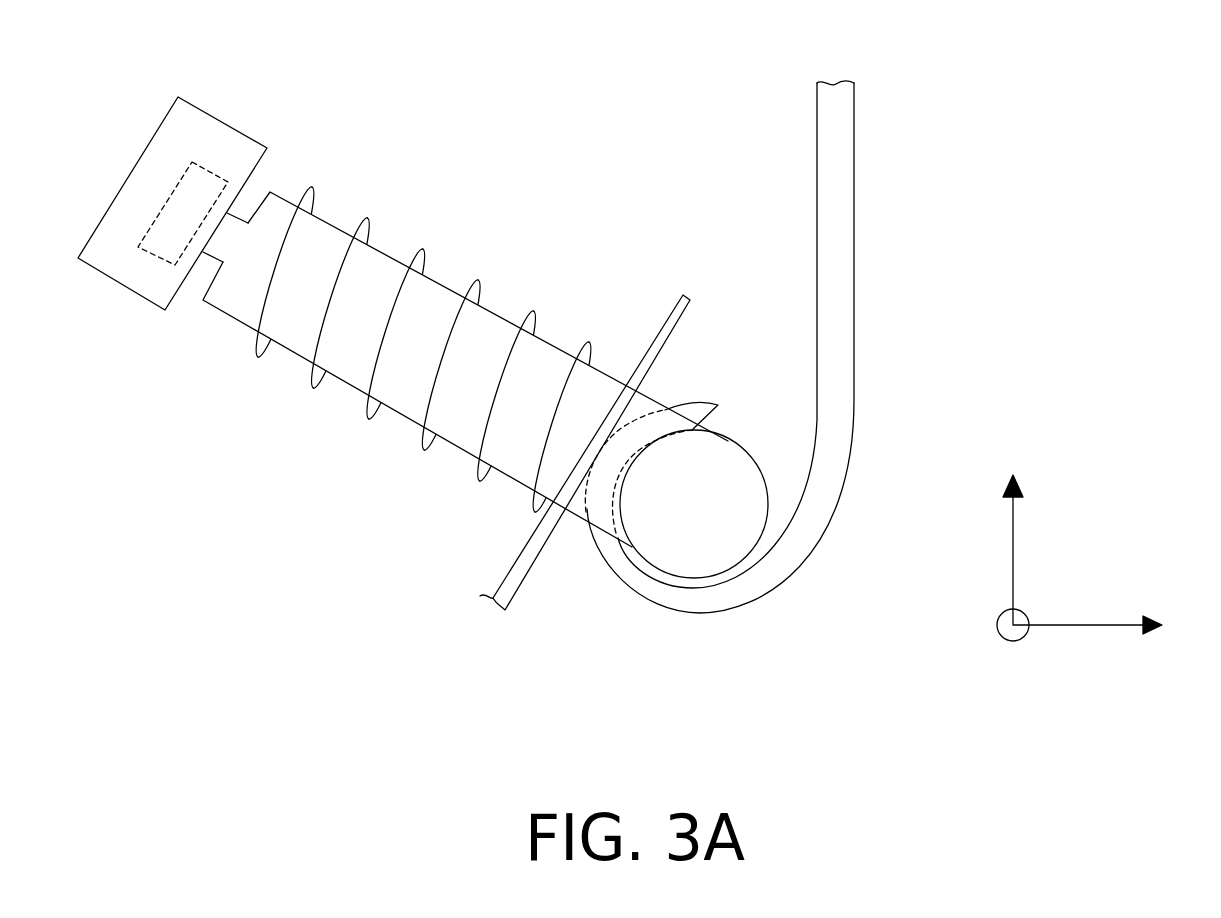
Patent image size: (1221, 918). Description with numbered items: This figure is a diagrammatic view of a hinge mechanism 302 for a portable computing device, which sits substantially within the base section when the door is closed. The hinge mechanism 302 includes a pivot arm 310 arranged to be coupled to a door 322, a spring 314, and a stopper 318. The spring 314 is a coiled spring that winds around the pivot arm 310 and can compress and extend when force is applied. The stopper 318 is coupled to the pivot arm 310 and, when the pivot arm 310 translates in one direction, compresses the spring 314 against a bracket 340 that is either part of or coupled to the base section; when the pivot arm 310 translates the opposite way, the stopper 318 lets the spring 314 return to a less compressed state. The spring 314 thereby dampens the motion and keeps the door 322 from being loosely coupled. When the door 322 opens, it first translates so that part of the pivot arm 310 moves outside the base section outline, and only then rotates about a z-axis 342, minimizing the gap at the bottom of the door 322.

The hinge mechanism 302 is at (551, 113).
The pivot arm 310 is at (375, 262).
The spring 314 is at (475, 280).
The stopper 318 is at (225, 138).
The door 322 is at (854, 228).
The bracket 340 is at (520, 573).
The z-axis 342 is at (1092, 625).